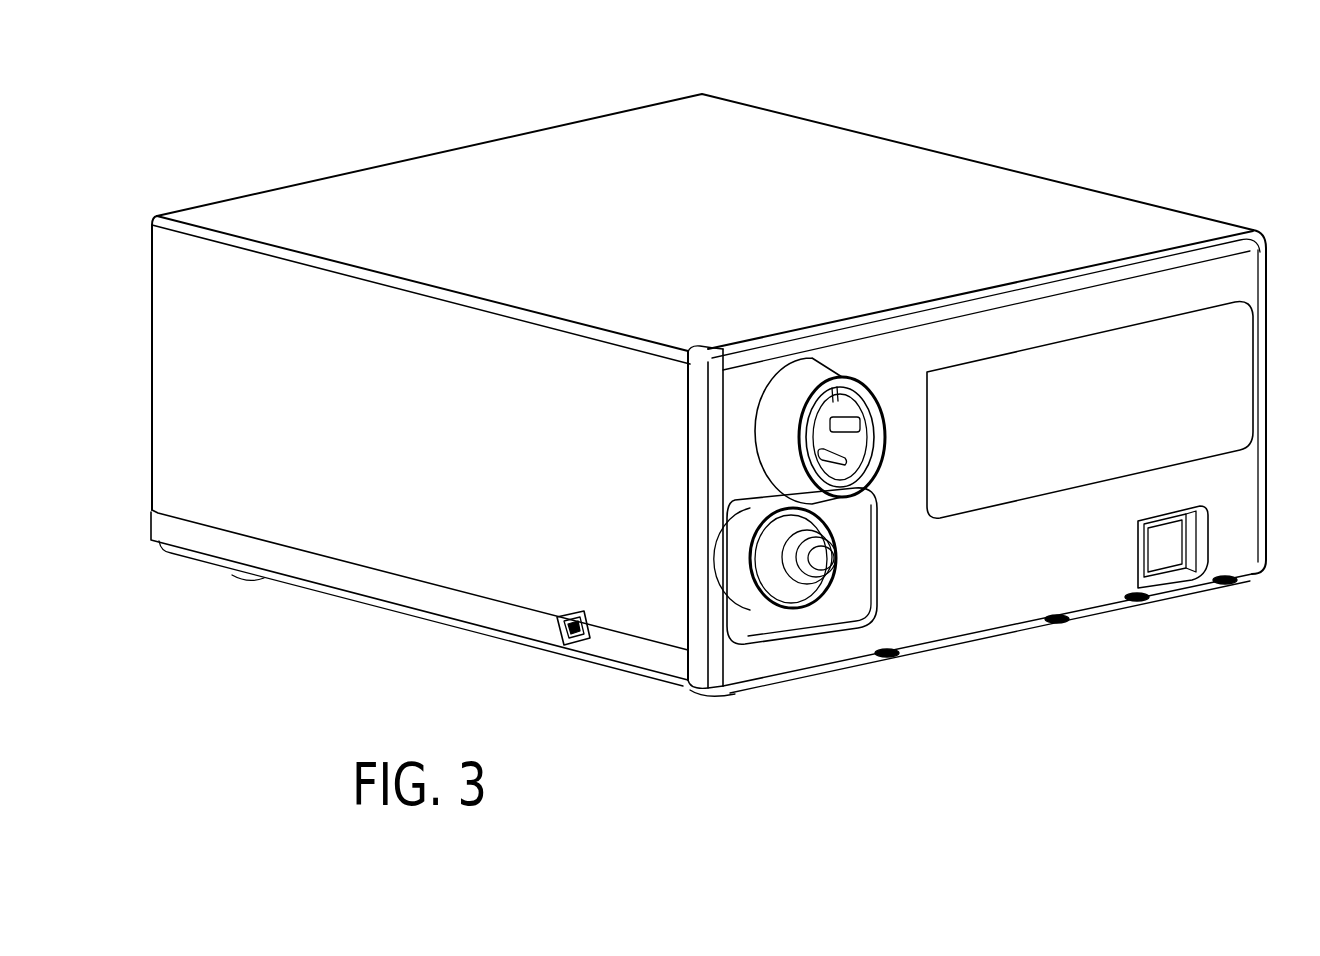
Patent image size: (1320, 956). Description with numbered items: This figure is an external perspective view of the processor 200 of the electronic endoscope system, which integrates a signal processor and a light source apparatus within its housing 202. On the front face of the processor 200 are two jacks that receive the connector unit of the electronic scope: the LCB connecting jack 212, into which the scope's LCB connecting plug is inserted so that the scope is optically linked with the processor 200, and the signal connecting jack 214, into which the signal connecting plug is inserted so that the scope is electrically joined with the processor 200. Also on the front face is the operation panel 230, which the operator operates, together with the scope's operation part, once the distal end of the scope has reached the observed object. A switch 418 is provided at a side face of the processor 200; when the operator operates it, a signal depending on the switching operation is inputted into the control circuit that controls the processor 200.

The processor 200 is at (708, 385).
The housing 202 is at (1073, 207).
The operation panel 230 is at (1083, 353).
The signal connecting jack 214 is at (872, 392).
The LCB connecting jack 212 is at (800, 597).
The switch 418 is at (575, 645).